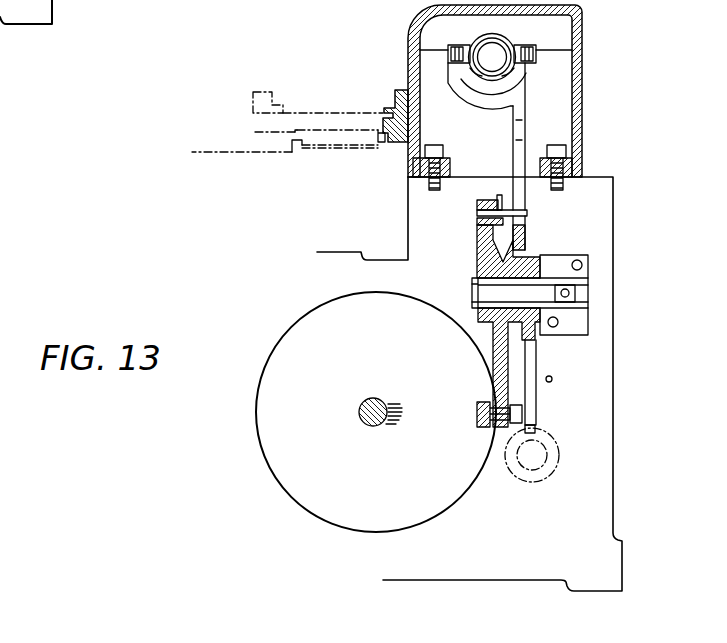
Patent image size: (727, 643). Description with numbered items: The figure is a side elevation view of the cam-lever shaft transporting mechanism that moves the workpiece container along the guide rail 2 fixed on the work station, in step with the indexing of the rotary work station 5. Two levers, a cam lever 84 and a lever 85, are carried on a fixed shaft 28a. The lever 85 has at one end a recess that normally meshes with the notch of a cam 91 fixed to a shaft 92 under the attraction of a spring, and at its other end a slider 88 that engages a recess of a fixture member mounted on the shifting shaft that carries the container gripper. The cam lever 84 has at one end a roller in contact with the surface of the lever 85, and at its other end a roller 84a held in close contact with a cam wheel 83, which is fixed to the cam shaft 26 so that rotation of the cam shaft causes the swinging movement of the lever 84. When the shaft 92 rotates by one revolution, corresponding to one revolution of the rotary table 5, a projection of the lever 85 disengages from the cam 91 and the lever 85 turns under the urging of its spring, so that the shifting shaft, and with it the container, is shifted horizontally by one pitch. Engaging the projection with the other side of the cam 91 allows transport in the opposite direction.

The guide rail 2 is at (265, 90).
The rotary work station 5 is at (222, 152).
The cam shaft 26 is at (370, 420).
The fixed shaft 28a is at (580, 293).
The cam wheel 83 is at (298, 345).
The cam lever 84 is at (490, 250).
The roller 84a is at (477, 415).
The lever 85 is at (520, 192).
The slider 88 is at (527, 85).
The cam 91 is at (537, 432).
The shaft 92 is at (534, 456).